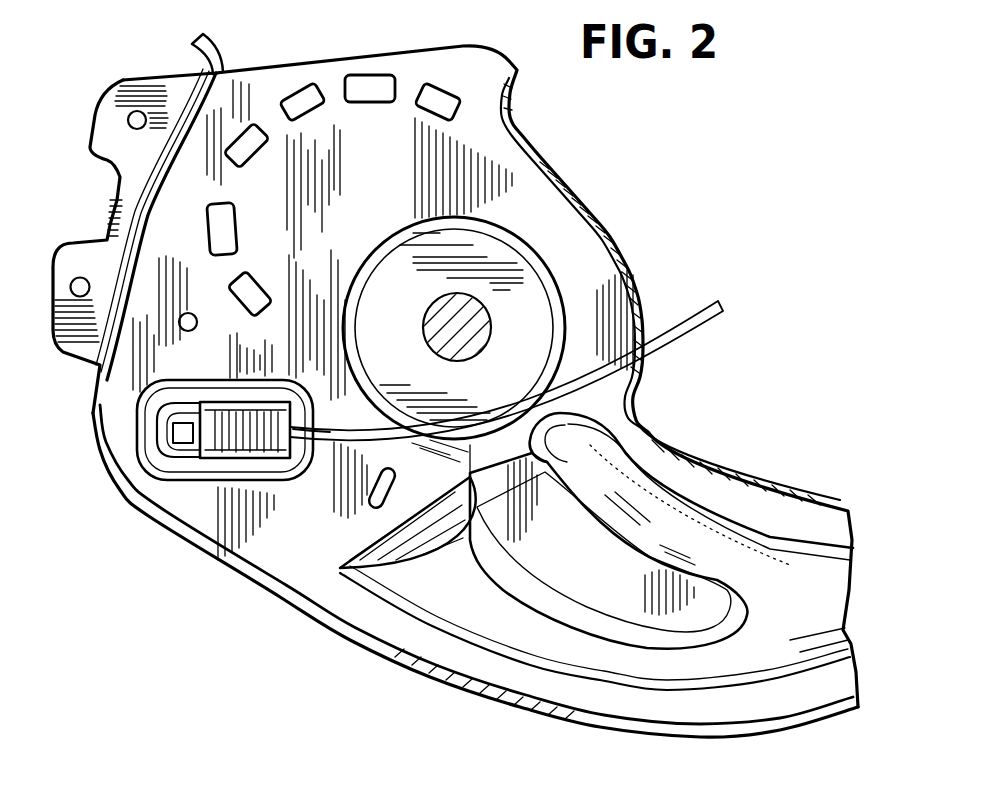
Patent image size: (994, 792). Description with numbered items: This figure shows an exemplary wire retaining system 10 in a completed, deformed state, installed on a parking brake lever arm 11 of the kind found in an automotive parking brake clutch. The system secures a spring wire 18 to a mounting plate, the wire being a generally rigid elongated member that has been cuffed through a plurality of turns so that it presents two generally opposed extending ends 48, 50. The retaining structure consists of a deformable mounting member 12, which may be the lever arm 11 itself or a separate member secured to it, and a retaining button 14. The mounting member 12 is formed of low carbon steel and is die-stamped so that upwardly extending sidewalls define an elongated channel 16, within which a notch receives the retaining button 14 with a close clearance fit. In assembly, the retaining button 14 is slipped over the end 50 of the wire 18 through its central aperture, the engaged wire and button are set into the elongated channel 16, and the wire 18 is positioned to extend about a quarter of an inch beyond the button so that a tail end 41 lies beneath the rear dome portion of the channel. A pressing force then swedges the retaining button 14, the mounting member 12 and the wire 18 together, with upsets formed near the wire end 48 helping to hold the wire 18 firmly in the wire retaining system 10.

The wire retaining system 10 is at (455, 385).
The parking brake lever arm 11 is at (620, 246).
The deformable mounting member 12 is at (180, 445).
The retaining button 14 is at (227, 420).
The elongated channel 16 is at (155, 468).
The wire 18 is at (280, 590).
The tail end 41 is at (178, 428).
The wire end 48 is at (320, 418).
The wire end 50 is at (680, 340).